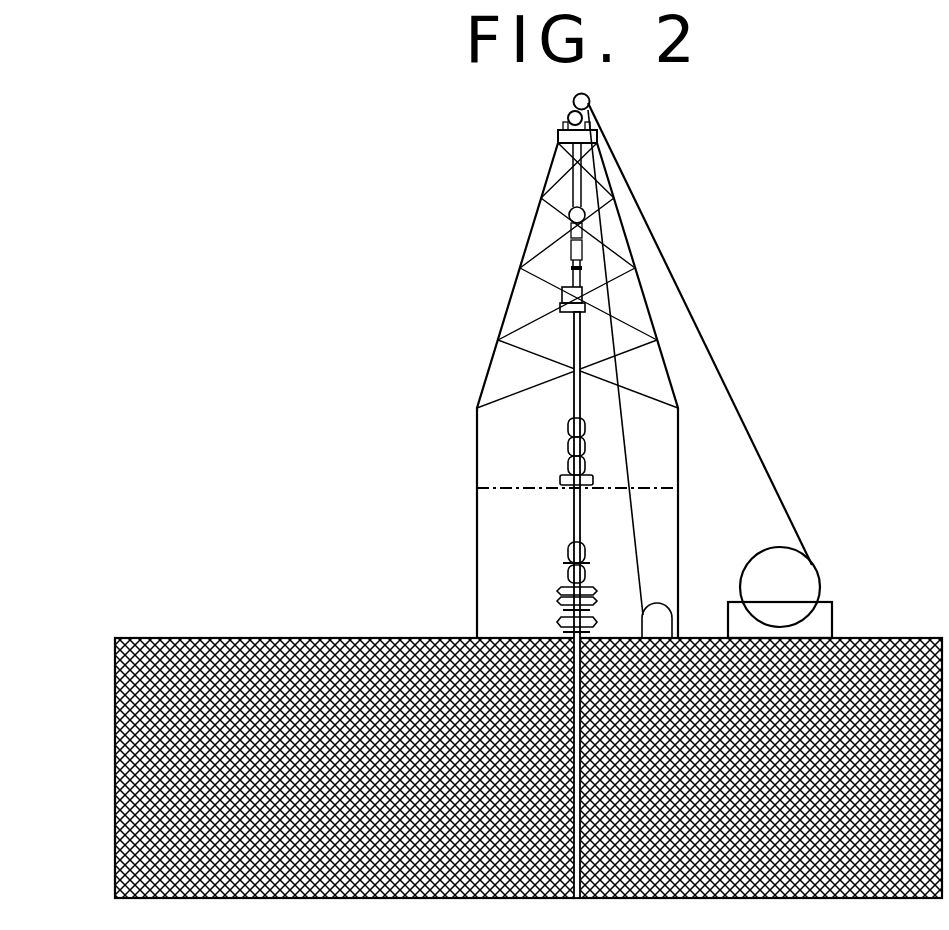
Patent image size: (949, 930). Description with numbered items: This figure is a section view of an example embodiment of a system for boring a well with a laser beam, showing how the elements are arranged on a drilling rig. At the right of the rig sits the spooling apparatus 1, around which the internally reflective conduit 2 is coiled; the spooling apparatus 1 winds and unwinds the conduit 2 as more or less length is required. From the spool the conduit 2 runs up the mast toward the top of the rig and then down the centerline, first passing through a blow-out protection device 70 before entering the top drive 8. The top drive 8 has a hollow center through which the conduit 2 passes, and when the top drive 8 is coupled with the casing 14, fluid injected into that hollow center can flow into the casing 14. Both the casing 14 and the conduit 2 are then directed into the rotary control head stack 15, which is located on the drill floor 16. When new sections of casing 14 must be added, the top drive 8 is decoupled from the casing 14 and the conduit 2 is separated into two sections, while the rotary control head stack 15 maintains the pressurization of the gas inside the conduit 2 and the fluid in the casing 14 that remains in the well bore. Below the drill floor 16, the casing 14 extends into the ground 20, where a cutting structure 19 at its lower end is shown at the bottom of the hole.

The spooling apparatus 1 is at (824, 582).
The internally reflective conduit 2 is at (713, 356).
The top drive 8 is at (594, 307).
The casing 14 is at (576, 356).
The rotary control head stack 15 is at (561, 446).
The drill floor 16 is at (493, 486).
The drill bit 19 is at (557, 559).
The ground 20 is at (492, 636).
The blow-out protection device 70 is at (638, 541).